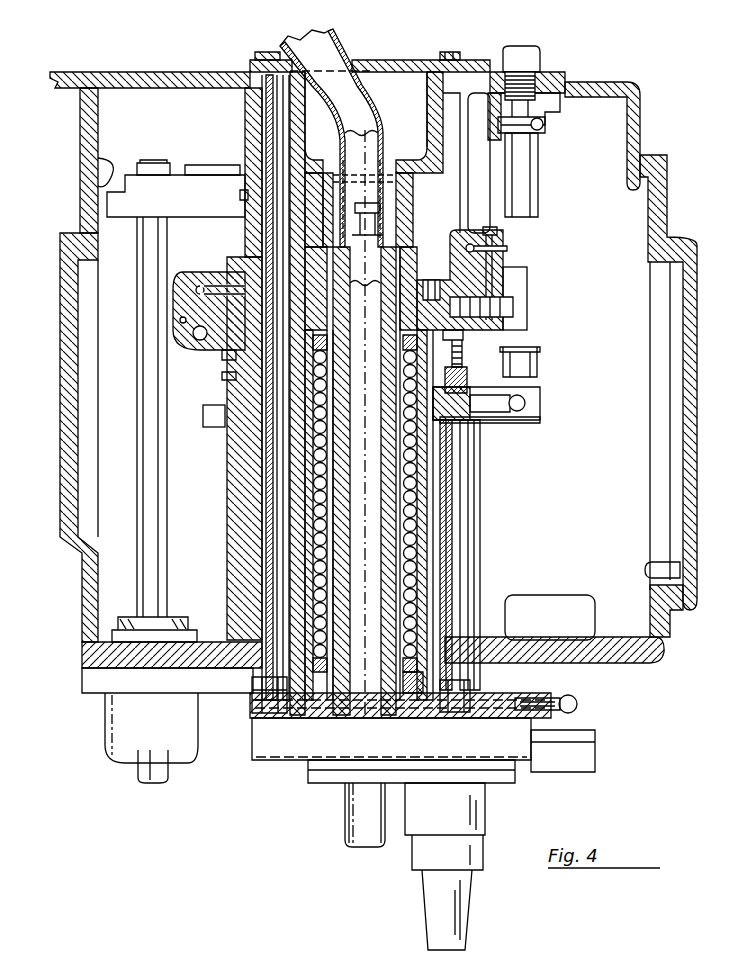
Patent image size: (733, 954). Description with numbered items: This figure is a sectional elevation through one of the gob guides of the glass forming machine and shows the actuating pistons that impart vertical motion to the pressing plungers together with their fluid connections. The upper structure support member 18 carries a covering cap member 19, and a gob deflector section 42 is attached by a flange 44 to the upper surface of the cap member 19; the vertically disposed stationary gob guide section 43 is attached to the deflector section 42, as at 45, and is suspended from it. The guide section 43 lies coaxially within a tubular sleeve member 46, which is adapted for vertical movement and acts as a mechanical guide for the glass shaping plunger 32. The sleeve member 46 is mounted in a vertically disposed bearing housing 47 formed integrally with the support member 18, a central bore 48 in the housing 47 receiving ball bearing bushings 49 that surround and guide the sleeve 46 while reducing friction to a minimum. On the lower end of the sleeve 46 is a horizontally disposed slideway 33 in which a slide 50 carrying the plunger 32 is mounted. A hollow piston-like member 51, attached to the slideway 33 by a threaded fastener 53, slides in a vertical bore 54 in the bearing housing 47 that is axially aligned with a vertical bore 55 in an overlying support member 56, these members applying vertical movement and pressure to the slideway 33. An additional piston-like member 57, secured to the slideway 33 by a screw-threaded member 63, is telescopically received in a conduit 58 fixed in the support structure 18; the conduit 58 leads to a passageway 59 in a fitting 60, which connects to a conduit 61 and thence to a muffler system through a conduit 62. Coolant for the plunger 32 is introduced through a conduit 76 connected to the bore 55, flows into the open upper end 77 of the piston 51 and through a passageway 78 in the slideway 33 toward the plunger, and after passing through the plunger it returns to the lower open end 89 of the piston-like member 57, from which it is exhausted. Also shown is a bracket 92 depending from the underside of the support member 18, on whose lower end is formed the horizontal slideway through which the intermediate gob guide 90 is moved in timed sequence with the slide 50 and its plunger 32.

The upper structure support member 18 is at (84, 586).
The covering cap member 19 is at (160, 72).
The plunger 32 is at (438, 918).
The slideway 33 is at (520, 722).
The deflector section 42 is at (330, 44).
The vertical guide section 43 is at (390, 292).
The flange 44 is at (388, 63).
The attachment point 45 is at (382, 209).
The tubular sleeve member 46 is at (413, 244).
The bearing housing 47 is at (250, 447).
The central bore 48 is at (464, 356).
The ball bearing bushings 49 is at (422, 545).
The slide 50 is at (583, 757).
The piston-like member 51 is at (248, 380).
The threaded fastener 53 is at (255, 712).
The vertical bore 54 is at (262, 470).
The vertical bore 55 is at (262, 240).
The overlying support member 56 is at (262, 262).
The piston-like member 57 is at (482, 450).
The conduit 58 is at (482, 470).
The passageway 59 is at (546, 423).
The fitting 60 is at (545, 403).
The conduit 61 is at (522, 195).
The conduit 62 is at (532, 68).
The screw-threaded member 63 is at (490, 684).
The conduit 76 is at (240, 196).
The open upper end 77 is at (268, 70).
The passageway 78 is at (305, 715).
The lower open end 89 is at (455, 715).
The intermediate gob guide 90 is at (345, 846).
The bracket 92 is at (130, 733).